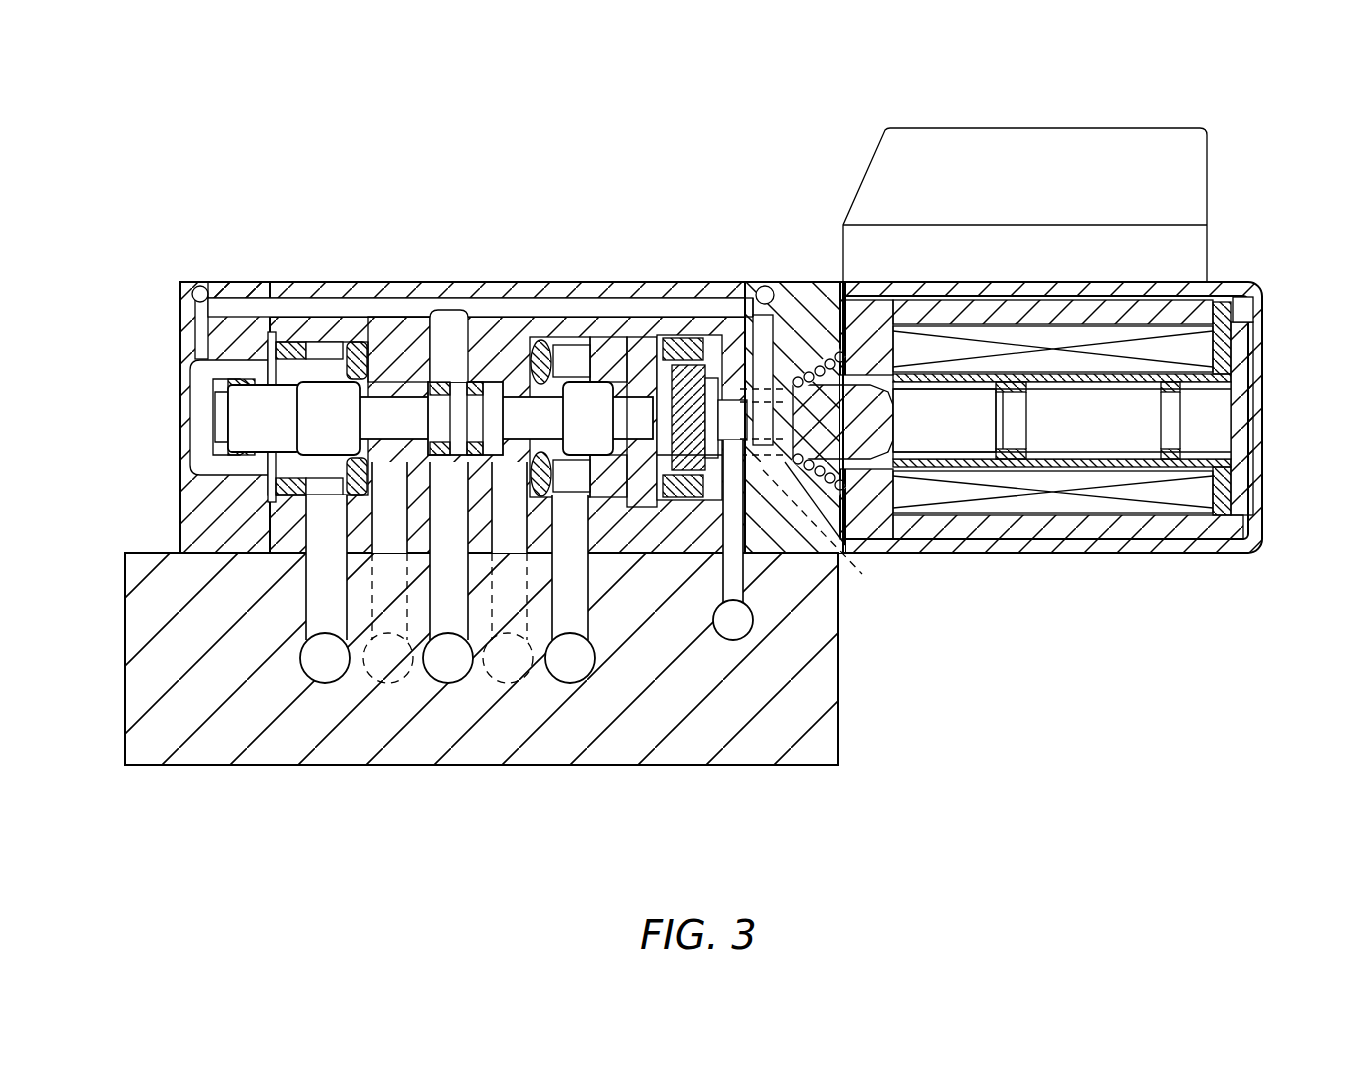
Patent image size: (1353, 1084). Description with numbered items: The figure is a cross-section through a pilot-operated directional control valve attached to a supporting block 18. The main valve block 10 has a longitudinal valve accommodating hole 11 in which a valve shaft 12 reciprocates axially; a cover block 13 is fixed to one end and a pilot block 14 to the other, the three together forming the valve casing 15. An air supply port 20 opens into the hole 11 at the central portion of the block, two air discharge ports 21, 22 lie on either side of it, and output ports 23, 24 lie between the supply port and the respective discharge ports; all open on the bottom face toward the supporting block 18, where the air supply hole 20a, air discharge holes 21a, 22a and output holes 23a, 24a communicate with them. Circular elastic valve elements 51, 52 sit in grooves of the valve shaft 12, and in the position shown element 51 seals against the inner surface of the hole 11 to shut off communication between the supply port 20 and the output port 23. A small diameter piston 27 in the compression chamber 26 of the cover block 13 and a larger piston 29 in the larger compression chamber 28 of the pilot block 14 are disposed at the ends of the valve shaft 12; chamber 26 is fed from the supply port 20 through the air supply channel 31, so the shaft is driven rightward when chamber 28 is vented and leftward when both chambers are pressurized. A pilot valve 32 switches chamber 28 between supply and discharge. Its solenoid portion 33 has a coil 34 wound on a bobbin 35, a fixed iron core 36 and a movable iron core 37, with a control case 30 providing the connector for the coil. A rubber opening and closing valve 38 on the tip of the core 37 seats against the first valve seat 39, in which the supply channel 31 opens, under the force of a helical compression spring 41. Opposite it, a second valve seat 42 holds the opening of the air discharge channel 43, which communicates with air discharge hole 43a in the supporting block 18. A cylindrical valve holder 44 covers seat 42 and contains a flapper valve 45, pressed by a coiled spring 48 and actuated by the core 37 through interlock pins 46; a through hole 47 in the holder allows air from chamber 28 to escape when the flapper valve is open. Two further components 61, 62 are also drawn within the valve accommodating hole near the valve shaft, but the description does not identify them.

The main valve block 10 is at (305, 290).
The valve accommodating hole 11 is at (378, 365).
The valve shaft 12 is at (410, 410).
The cover block 13 is at (232, 290).
The pilot block 14 is at (662, 345).
The valve casing 15 is at (185, 280).
The supporting block 18 is at (150, 625).
The air supply port 20 is at (460, 545).
The air supply hole 20a is at (448, 672).
The air discharge port 21 is at (590, 545).
The air discharge hole 21a is at (580, 672).
The air discharge port 22 is at (315, 532).
The air discharge hole 22a is at (320, 672).
The output port 23 is at (522, 545).
The output hole 23a is at (506, 686).
The output port 24 is at (378, 545).
The output hole 24a is at (388, 686).
The compression chamber 26 is at (207, 440).
The small diameter piston 27 is at (230, 407).
The compression chamber 28 is at (695, 505).
The piston 29 is at (665, 515).
The control case 30 is at (995, 140).
The air supply channel 31 is at (507, 312).
The pilot valve 32 is at (1258, 280).
The solenoid portion 33 is at (1116, 548).
The coil 34 is at (1158, 495).
The bobbin 35 is at (1215, 383).
The fixed iron core 36 is at (1215, 440).
The movable iron core 37 is at (978, 437).
The opening and closing valve 38 is at (795, 375).
The first valve seat 39 is at (770, 286).
The helical compression spring 41 is at (826, 355).
The second valve seat 42 is at (737, 400).
The air discharge channel 43 is at (742, 548).
The air discharge hole 43a is at (738, 625).
The valve holder 44 is at (688, 385).
The flapper valve 45 is at (708, 390).
The interlock pins 46 is at (828, 530).
The through hole 47 is at (640, 400).
The coiled spring 48 is at (658, 375).
The elastic valve element 51 is at (482, 378).
The elastic valve element 52 is at (446, 378).
The seal 61 is at (542, 375).
The seal 62 is at (362, 382).